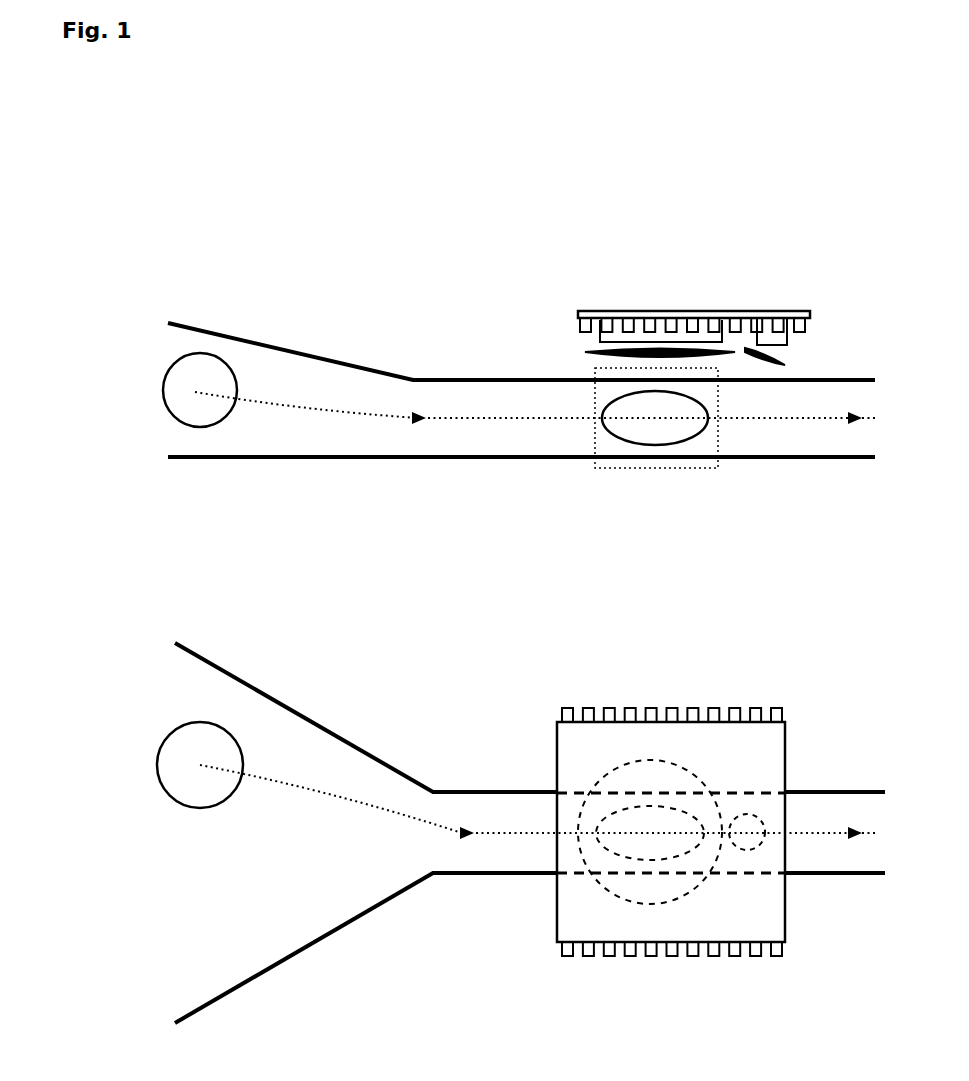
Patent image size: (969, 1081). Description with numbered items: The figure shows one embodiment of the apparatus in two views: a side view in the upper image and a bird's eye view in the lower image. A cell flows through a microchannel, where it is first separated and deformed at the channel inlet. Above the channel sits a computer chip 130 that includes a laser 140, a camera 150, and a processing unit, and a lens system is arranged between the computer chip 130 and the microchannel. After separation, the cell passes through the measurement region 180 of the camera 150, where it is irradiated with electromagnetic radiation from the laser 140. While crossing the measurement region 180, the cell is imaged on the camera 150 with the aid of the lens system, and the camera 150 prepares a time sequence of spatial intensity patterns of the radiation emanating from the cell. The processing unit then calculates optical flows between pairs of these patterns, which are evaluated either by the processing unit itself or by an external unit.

The computer chip 130 is at (787, 735).
The laser 140 is at (805, 313).
The camera 150 is at (600, 320).
The measurement region 180 is at (585, 352).